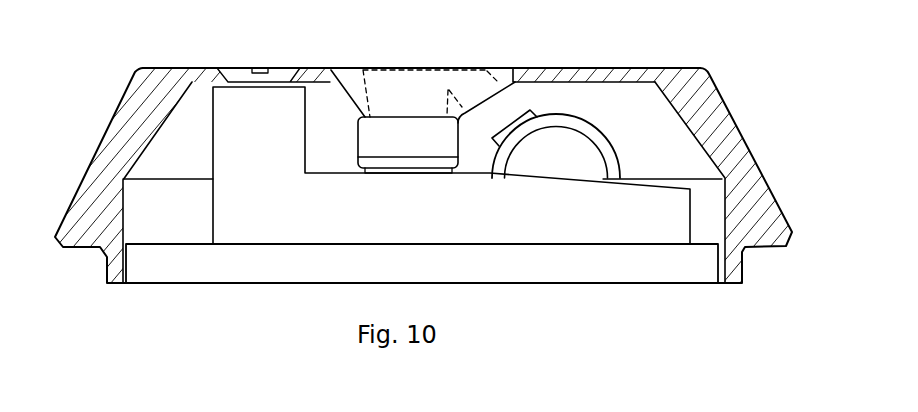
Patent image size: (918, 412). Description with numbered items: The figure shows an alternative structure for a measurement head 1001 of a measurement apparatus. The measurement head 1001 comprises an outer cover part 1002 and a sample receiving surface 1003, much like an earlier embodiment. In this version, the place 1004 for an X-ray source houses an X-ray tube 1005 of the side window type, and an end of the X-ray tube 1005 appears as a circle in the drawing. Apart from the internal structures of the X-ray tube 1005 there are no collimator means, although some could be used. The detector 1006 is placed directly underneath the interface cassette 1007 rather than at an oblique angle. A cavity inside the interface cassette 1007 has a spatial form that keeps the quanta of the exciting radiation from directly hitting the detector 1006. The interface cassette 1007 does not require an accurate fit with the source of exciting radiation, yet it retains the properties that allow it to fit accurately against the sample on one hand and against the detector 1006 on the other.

The measurement head 1001 is at (99, 56).
The outer cover part 1002 is at (713, 100).
The sample receiving surface 1003 is at (585, 66).
The place for an X-ray source 1004 is at (645, 227).
The X-ray tube 1005 is at (542, 140).
The detector 1006 is at (370, 143).
The interface cassette 1007 is at (407, 78).